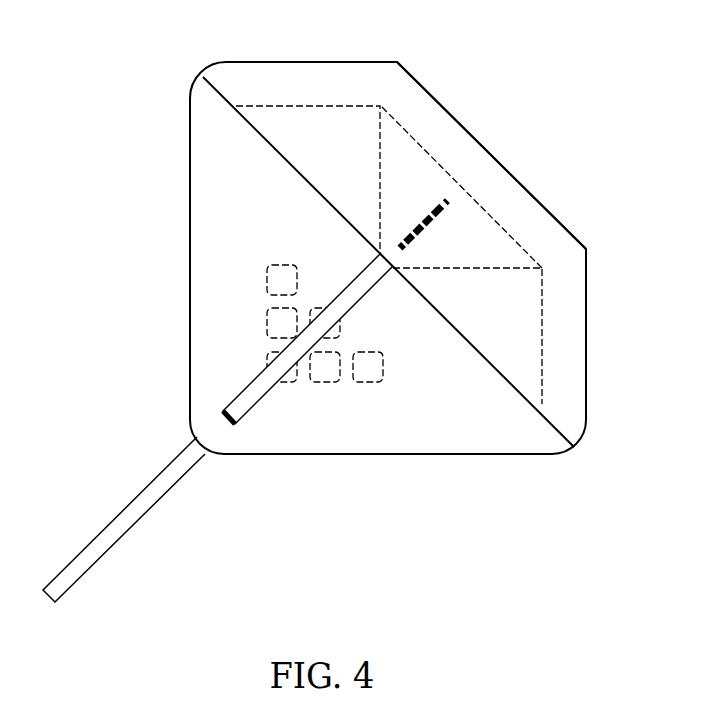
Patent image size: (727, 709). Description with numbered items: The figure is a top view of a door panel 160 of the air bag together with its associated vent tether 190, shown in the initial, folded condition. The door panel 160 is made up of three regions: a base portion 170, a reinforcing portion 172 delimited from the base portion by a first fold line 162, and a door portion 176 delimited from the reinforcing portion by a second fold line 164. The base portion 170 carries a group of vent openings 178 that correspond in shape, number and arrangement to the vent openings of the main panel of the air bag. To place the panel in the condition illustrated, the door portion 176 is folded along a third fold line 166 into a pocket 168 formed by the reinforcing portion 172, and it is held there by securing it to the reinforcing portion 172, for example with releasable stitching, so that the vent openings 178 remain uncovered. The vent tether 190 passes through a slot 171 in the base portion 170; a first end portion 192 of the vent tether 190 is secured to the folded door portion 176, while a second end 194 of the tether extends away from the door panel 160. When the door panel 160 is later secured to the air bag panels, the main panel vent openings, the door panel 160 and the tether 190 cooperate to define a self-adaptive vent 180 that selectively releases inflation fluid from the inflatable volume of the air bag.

The door panel 160 is at (465, 430).
The first fold line 162 is at (445, 107).
The second fold line 164 is at (480, 355).
The third fold line 166 is at (508, 232).
The pocket 168 is at (516, 427).
The base portion 170 is at (225, 268).
The slot 171 is at (238, 440).
The reinforcing portion 172 is at (558, 325).
The door portion 176 is at (337, 143).
The vent openings 178 is at (322, 400).
The self-adaptive vent 180 is at (597, 202).
The vent tether 190 is at (160, 532).
The first end portion 192 is at (450, 221).
The second end 194 is at (70, 611).